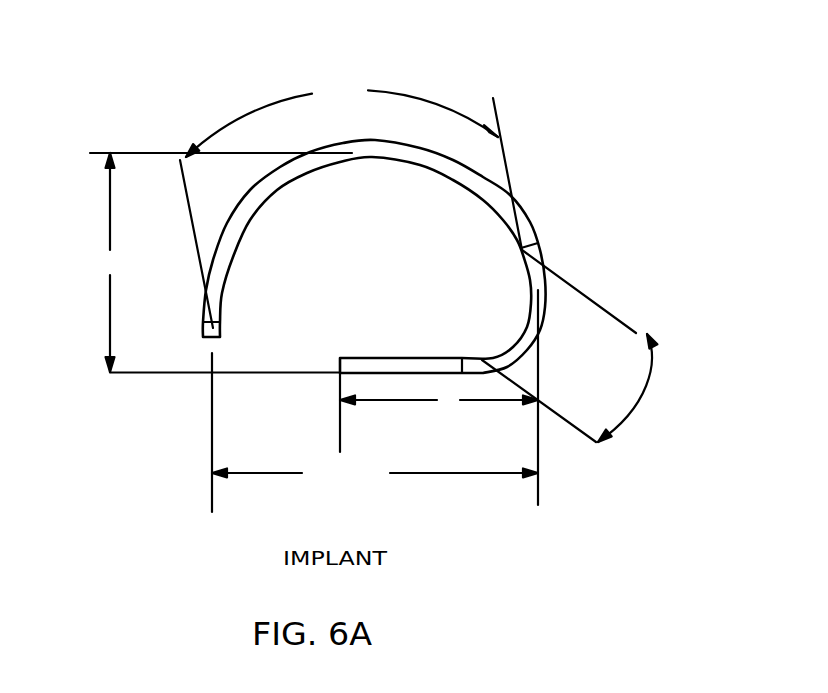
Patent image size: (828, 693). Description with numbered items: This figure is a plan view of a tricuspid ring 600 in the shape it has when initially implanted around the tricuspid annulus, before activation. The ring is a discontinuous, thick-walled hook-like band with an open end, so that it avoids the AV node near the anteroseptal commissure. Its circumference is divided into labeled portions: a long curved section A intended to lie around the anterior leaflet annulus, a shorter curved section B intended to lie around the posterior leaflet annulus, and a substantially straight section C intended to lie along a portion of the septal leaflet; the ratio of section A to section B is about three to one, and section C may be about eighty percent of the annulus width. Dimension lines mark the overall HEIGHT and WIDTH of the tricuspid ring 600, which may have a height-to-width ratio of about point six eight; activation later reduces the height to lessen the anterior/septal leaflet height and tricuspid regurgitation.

The tricuspid ring 600 is at (558, 178).
The section A is at (306, 204).
The section B is at (570, 346).
The section C is at (439, 397).
The height of the tricuspid ring HEIGHT is at (207, 263).
The width of the tricuspid ring WIDTH is at (375, 432).